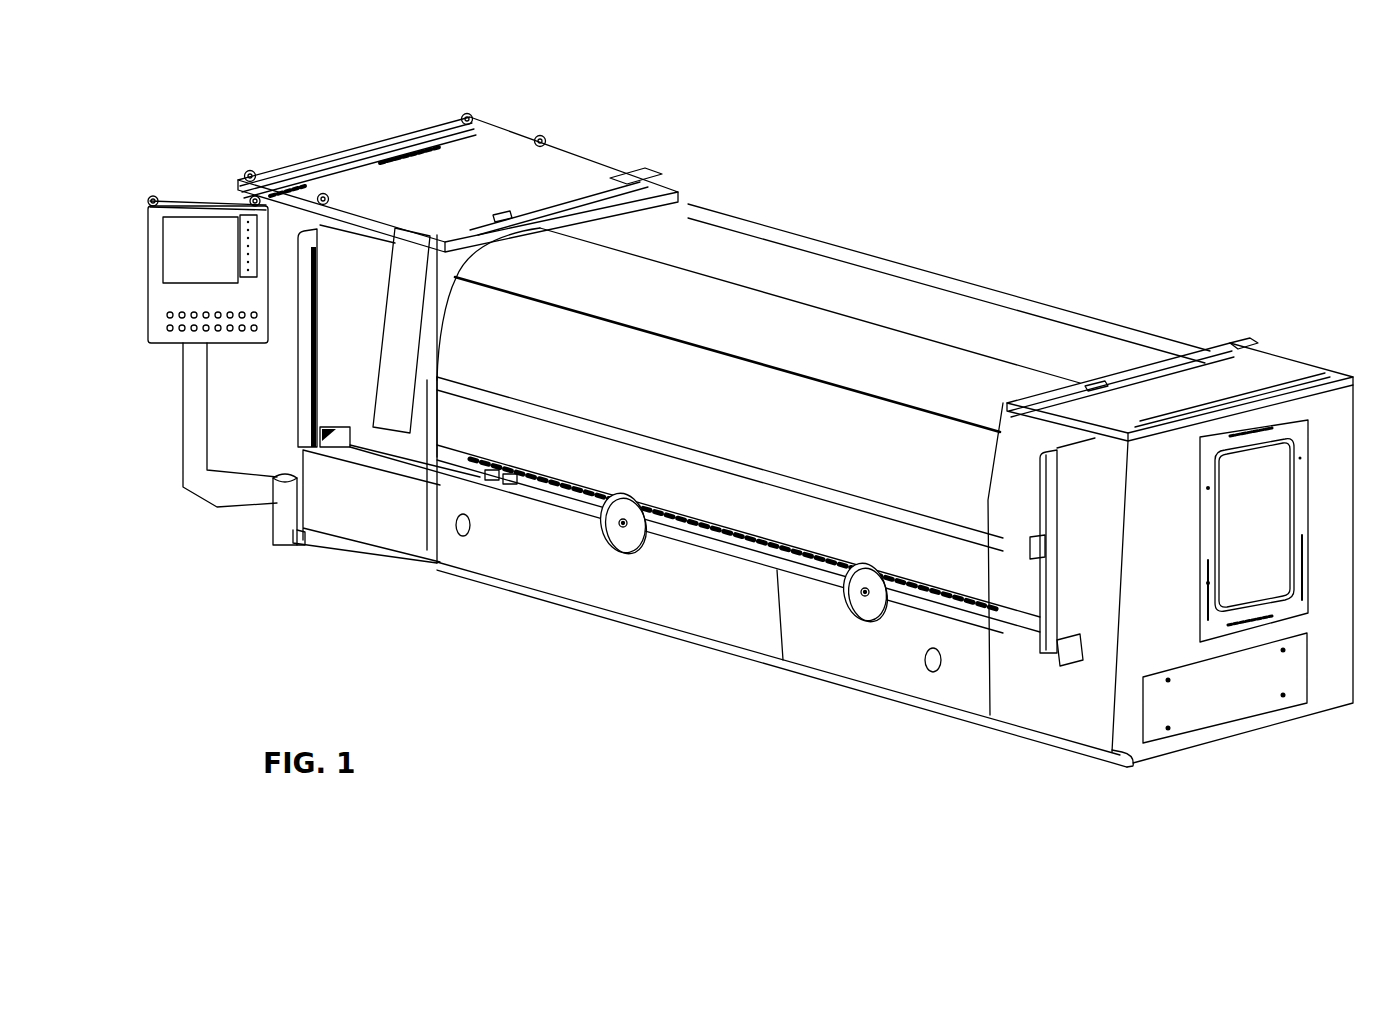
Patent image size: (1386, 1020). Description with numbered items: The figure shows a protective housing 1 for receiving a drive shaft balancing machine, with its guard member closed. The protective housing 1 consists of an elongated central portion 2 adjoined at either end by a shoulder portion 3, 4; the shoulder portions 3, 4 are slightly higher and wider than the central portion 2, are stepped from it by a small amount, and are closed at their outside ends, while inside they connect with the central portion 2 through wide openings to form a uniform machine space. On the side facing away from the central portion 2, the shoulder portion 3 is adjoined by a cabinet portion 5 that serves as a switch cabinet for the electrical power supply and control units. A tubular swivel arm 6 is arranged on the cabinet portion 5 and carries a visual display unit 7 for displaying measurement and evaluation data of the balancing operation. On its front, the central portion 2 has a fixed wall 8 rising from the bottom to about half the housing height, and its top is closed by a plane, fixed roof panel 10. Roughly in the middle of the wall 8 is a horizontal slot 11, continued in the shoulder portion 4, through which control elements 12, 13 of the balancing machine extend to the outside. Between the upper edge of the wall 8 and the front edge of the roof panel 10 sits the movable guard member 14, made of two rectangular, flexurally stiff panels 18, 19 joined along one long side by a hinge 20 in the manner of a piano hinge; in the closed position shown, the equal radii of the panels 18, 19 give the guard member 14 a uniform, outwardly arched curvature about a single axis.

The protective housing 1 is at (1150, 315).
The central portion 2 is at (884, 253).
The shoulder portion 3 is at (612, 163).
The shoulder portion 4 is at (1283, 355).
The cabinet portion 5 is at (381, 140).
The tubular swivel arm 6 is at (197, 492).
The visual display unit 7 is at (205, 203).
The fixed wall 8 is at (720, 603).
The roof panel 10 is at (930, 317).
The horizontal slot 11 is at (700, 542).
The control element 12 is at (617, 545).
The control element 13 is at (855, 607).
The guard member 14 is at (612, 272).
The panel 18 is at (968, 368).
The panel 19 is at (597, 403).
The hinge 20 is at (723, 350).